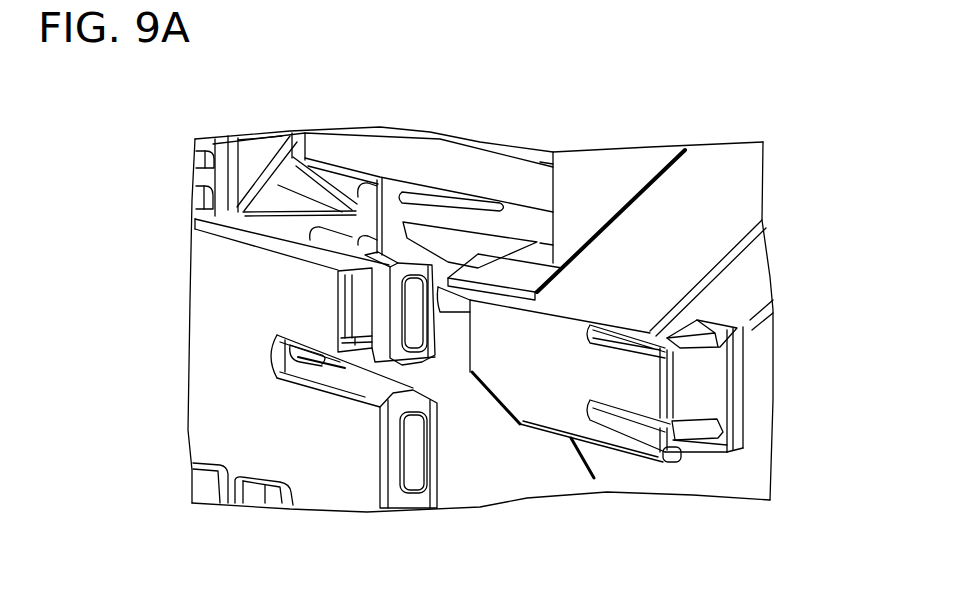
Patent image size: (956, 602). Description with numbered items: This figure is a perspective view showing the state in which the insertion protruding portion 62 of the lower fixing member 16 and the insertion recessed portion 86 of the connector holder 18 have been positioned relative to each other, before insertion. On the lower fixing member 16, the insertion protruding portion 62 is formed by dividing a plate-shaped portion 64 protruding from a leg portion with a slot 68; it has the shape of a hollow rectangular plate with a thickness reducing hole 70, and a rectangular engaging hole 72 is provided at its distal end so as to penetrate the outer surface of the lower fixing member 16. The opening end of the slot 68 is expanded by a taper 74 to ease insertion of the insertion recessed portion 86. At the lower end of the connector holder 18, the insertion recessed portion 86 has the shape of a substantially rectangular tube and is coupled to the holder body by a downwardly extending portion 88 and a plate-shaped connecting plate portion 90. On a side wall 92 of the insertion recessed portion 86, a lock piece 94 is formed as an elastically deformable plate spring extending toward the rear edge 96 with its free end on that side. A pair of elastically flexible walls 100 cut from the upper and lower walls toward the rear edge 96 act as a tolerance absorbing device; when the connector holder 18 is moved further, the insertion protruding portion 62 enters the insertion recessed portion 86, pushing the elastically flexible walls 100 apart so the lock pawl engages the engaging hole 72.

The lower fixing member 16 is at (175, 128).
The connector holder 18 is at (785, 153).
The insertion protruding portion 62 is at (290, 293).
The plate-shaped portion 64 is at (338, 448).
The slot 68 is at (345, 352).
The thickness reducing hole 70 is at (398, 317).
The engaging hole 72 is at (372, 319).
The taper 74 is at (392, 386).
The insertion recessed portion 86 is at (756, 383).
The downwardly extending portion 88 is at (587, 192).
The connecting plate portion 90 is at (705, 195).
The side wall 92 is at (545, 383).
The lock piece 94 is at (630, 382).
The rear edge 96 is at (680, 452).
The elastically flexible wall 100 is at (708, 333).